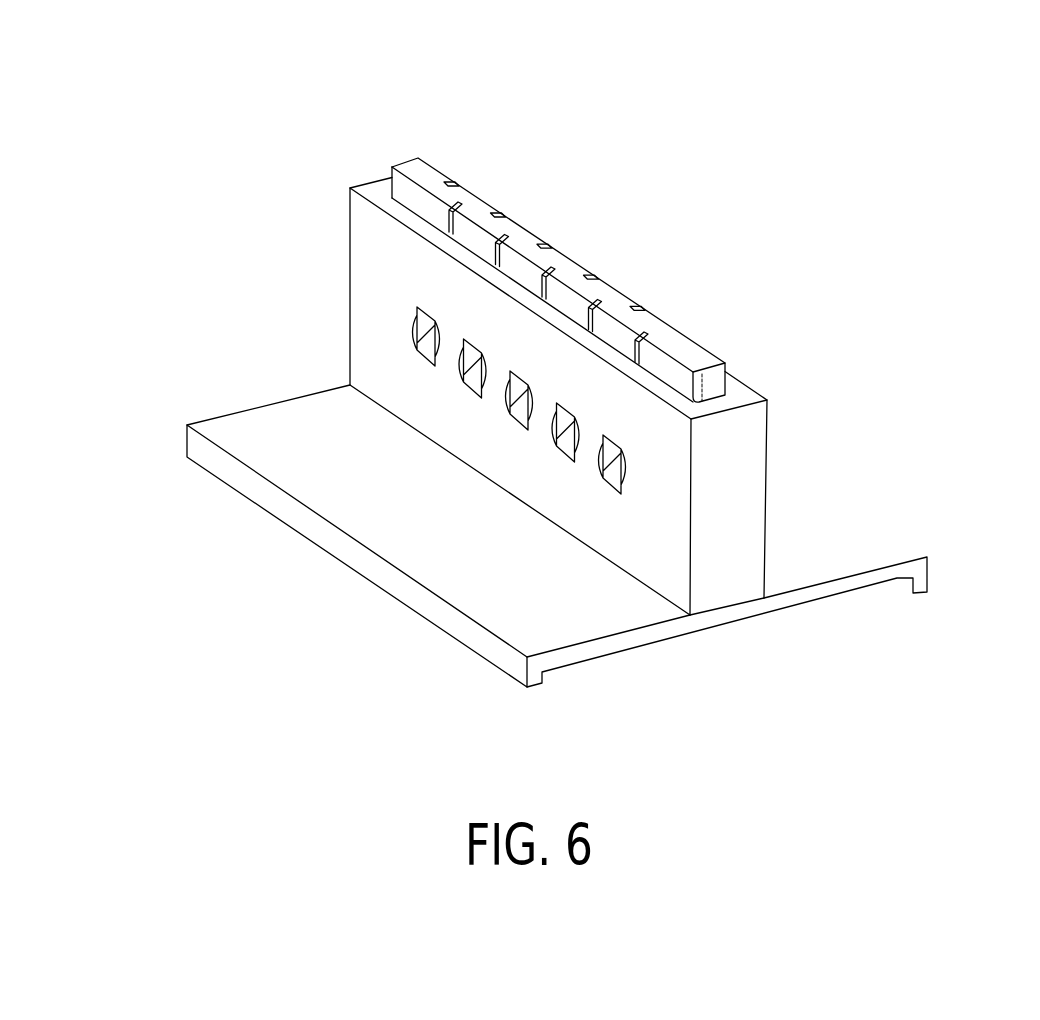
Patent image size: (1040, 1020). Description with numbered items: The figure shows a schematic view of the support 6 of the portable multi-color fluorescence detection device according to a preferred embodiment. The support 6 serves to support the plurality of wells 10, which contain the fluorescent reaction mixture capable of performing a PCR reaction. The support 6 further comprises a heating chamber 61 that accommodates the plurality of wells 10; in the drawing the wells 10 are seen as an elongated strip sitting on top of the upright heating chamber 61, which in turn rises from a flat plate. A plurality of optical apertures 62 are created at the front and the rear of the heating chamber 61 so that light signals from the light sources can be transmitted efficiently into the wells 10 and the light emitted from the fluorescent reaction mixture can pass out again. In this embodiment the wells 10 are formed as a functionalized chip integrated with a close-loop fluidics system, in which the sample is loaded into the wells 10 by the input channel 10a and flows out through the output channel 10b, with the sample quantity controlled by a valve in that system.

The support 6 is at (837, 527).
The heating chamber 61 is at (658, 540).
The optical apertures 62 is at (418, 332).
The wells 10 is at (445, 132).
The input channel 10a is at (643, 312).
The output channel 10b is at (635, 340).